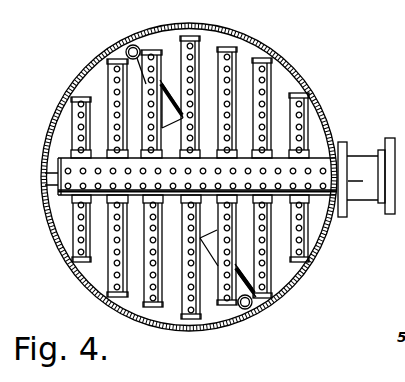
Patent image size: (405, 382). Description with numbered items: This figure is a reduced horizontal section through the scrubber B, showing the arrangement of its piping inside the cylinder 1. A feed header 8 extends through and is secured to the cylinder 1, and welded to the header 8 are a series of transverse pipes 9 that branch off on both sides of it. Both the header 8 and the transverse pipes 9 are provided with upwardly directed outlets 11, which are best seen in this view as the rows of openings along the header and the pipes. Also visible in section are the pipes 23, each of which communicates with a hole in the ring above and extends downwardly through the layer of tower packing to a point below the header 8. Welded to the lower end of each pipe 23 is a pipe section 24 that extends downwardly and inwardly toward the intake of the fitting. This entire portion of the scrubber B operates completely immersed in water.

The scrubber B is at (78, 61).
The cylinder 1 is at (286, 61).
The feed header 8 is at (362, 156).
The transverse pipes 9 is at (272, 272).
The upwardly directed outlets 11 is at (272, 264).
The pipe 23 is at (128, 47).
The pipe section 24 is at (170, 92).